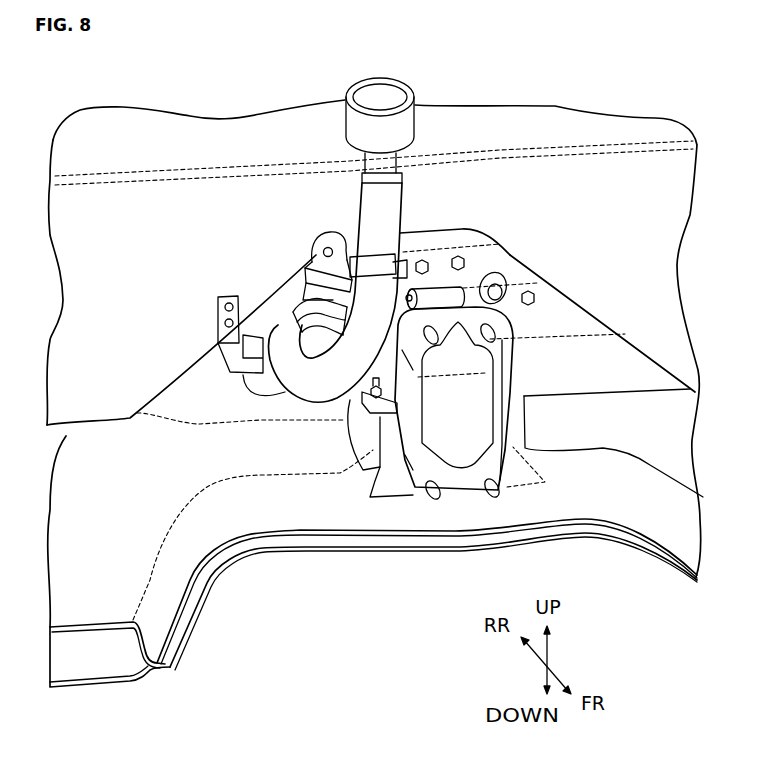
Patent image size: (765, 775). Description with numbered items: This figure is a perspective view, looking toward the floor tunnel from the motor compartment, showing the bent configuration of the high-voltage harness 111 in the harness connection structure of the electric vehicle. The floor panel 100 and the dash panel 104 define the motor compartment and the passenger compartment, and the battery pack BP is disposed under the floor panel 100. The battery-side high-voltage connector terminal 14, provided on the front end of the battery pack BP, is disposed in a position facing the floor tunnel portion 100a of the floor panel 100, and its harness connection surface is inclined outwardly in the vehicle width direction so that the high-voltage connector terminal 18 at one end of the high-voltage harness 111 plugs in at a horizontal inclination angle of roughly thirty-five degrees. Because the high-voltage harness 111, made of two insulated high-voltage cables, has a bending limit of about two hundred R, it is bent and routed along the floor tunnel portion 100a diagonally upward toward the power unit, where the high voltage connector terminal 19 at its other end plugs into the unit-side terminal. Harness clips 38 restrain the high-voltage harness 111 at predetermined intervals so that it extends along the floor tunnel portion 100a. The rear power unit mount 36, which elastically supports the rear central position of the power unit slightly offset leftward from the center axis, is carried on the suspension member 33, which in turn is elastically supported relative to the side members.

The battery-side high-voltage connector terminal 14 is at (318, 280).
The high-voltage connector terminal 18 is at (290, 312).
The high voltage connector terminal 19 is at (416, 128).
The suspension member 33 is at (245, 512).
The rear power unit mount 36 is at (505, 258).
The harness clip 38 is at (258, 300).
The floor panel 100 is at (607, 178).
The floor tunnel portion 100a is at (455, 231).
The dash panel 104 is at (187, 134).
The high-voltage harness 111 is at (292, 398).
The battery pack BP is at (543, 340).